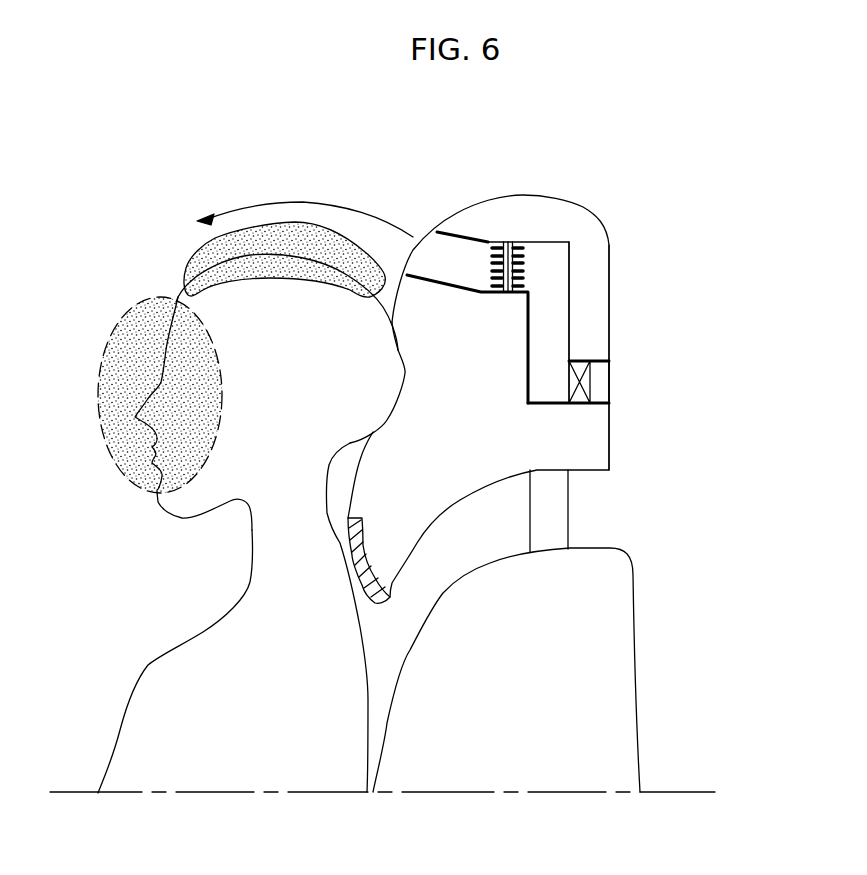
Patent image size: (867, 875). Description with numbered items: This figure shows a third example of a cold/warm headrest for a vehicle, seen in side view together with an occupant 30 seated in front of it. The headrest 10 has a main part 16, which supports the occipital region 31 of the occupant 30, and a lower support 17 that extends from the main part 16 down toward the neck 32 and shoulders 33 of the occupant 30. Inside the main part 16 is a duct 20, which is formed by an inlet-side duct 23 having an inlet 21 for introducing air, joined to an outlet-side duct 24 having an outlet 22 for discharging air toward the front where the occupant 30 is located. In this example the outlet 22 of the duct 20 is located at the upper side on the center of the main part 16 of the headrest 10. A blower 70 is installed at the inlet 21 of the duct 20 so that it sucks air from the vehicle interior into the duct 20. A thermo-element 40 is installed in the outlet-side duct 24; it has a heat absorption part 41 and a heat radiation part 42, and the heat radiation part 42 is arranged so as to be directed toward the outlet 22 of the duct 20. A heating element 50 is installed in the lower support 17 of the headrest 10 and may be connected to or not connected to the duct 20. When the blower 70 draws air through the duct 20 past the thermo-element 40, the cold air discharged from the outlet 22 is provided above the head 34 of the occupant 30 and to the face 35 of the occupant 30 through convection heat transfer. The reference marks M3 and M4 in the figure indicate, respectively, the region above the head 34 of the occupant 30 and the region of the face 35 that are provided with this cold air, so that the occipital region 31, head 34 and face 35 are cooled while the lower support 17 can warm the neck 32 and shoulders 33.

The headrest 10 is at (589, 207).
The main part 16 is at (448, 342).
The lower support 17 is at (394, 523).
The duct 20 is at (578, 313).
The inlet 21 is at (600, 387).
The outlet 22 is at (432, 266).
The inlet-side duct 23 is at (553, 405).
The outlet-side duct 24 is at (543, 241).
The occupant 30 is at (163, 715).
The occipital region 31 is at (398, 350).
The neck 32 is at (292, 558).
The shoulders 33 is at (343, 551).
The head 34 is at (212, 262).
The face 35 is at (265, 366).
The thermo-element 40 is at (531, 258).
The heat absorption part 41 is at (523, 277).
The heat radiation part 42 is at (490, 258).
The heating element 50 is at (366, 582).
The blower 70 is at (588, 373).
The region above the head M3 is at (282, 235).
The region of the face M4 is at (127, 362).